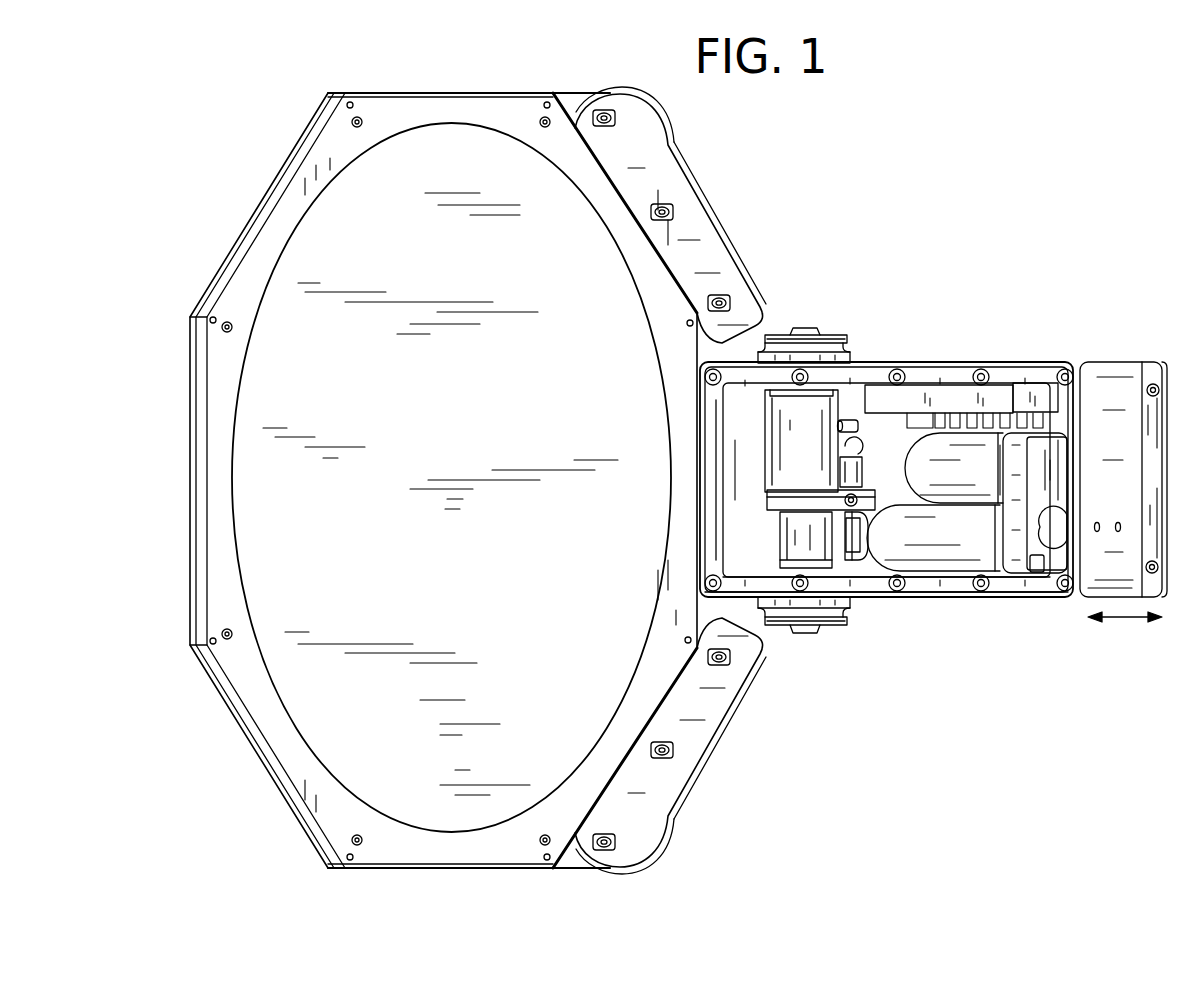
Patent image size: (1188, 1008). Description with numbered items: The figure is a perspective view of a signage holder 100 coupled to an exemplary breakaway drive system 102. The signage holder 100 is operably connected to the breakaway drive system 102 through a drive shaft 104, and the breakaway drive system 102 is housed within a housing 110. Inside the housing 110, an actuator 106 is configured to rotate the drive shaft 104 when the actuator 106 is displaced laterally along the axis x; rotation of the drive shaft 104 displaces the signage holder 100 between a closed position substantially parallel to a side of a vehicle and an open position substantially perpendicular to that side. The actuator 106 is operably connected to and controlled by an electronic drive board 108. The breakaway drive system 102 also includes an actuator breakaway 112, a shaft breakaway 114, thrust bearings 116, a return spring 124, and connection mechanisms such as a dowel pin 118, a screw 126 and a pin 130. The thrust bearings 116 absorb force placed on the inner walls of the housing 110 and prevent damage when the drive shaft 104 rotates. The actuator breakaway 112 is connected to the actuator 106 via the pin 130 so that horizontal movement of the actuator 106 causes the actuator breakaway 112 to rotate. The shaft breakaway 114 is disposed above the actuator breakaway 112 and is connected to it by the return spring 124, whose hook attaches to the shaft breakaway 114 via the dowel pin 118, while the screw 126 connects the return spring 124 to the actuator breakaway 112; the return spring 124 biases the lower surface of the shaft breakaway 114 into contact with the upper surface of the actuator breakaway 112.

The signage holder 100 is at (303, 143).
The breakaway drive system 102 is at (1050, 338).
The drive shaft 104 is at (817, 333).
The actuator 106 is at (960, 550).
The electronic drive board 108 is at (1048, 392).
The housing 110 is at (935, 592).
The actuator breakaway 112 is at (812, 555).
The shaft breakaway 114 is at (790, 412).
The thrust bearings 116 is at (795, 378).
The dowel pin 118 is at (850, 422).
The return spring 124 is at (858, 472).
The screw 126 is at (848, 520).
The pin 130 is at (856, 548).